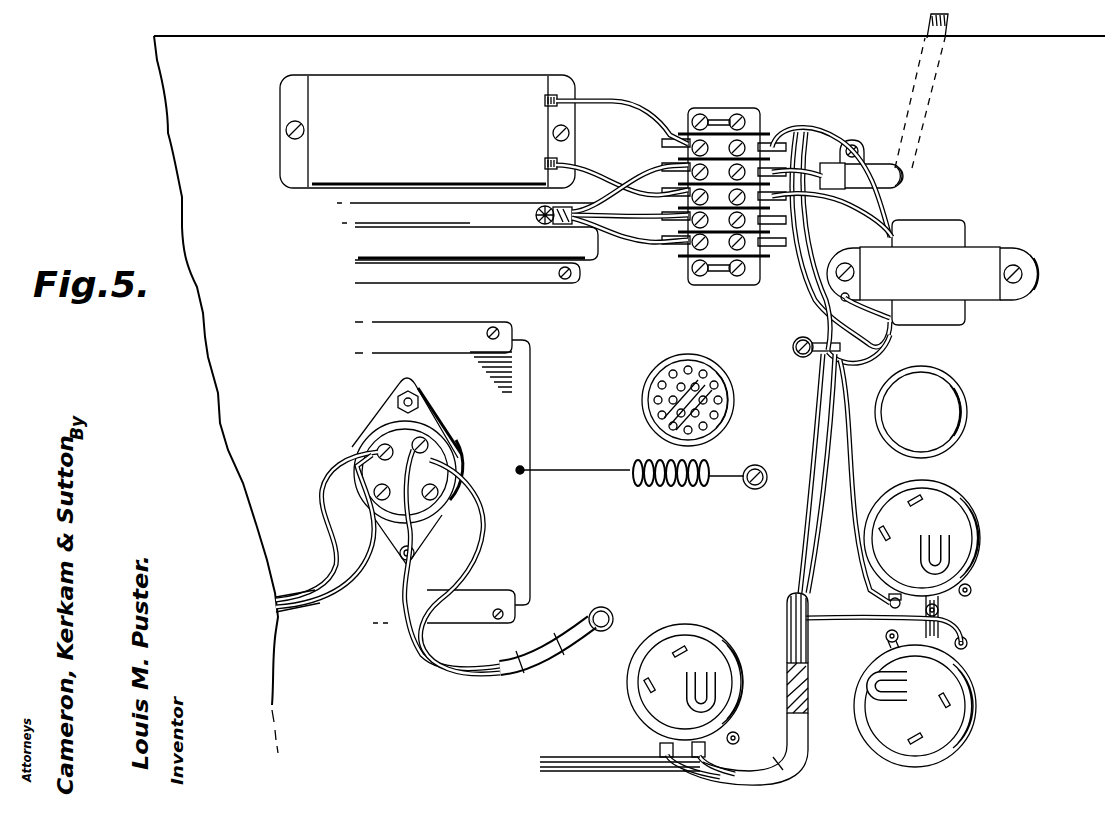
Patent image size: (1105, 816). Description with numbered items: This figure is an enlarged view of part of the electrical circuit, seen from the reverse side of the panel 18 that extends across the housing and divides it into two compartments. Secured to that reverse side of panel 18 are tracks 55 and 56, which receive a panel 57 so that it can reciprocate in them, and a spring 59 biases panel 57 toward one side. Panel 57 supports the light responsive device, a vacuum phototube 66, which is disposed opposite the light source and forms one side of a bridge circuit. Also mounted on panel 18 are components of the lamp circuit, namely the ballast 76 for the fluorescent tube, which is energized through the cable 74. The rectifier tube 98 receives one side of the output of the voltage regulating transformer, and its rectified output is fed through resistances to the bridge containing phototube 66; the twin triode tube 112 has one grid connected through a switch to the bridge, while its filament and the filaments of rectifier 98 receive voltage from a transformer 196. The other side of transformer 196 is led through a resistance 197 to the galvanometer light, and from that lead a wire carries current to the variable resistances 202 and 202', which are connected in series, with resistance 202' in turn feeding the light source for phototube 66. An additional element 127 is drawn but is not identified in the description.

The panel 18 is at (835, 62).
The ballast 76 is at (487, 90).
The cable 74 is at (885, 187).
The transformer 196 is at (985, 256).
The resistance 197 is at (800, 360).
The rectifier tube 98 is at (955, 400).
The twin triode tube 112 is at (738, 410).
The spring 59 is at (665, 490).
The track 55 is at (473, 333).
The panel 57 is at (520, 531).
The track 56 is at (518, 622).
The vacuum phototube 66 is at (450, 452).
The outlet socket 127 is at (700, 643).
The variable resistance 202 is at (950, 559).
The variable resistance 202' is at (948, 698).